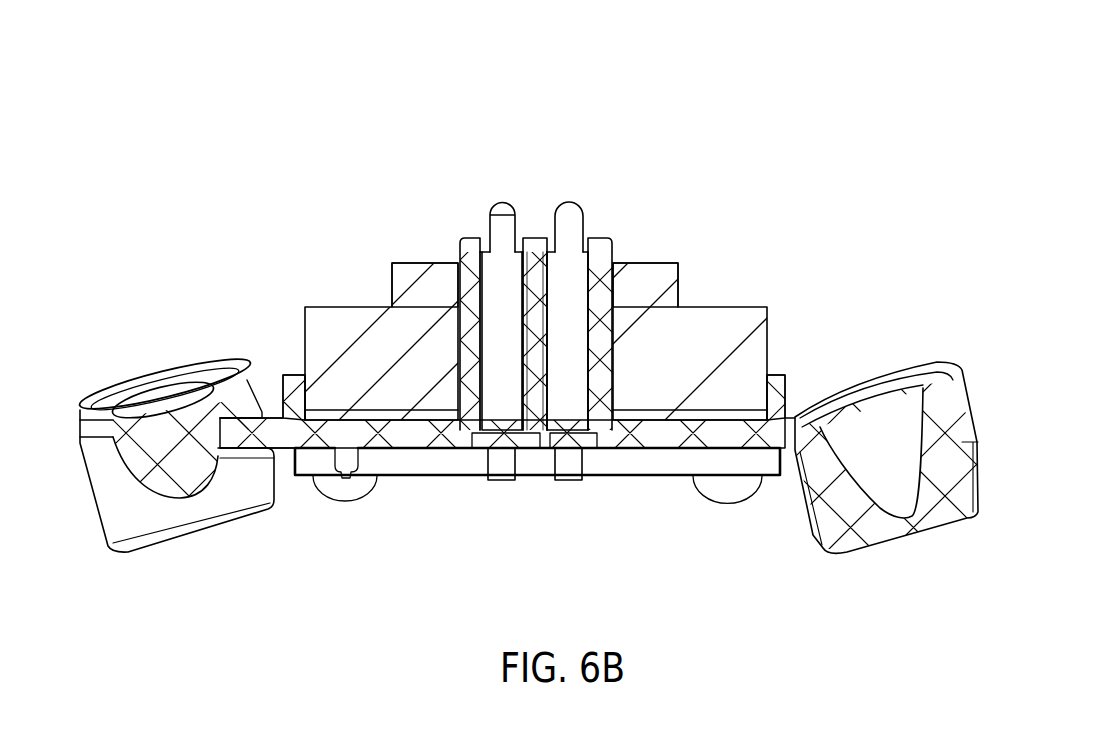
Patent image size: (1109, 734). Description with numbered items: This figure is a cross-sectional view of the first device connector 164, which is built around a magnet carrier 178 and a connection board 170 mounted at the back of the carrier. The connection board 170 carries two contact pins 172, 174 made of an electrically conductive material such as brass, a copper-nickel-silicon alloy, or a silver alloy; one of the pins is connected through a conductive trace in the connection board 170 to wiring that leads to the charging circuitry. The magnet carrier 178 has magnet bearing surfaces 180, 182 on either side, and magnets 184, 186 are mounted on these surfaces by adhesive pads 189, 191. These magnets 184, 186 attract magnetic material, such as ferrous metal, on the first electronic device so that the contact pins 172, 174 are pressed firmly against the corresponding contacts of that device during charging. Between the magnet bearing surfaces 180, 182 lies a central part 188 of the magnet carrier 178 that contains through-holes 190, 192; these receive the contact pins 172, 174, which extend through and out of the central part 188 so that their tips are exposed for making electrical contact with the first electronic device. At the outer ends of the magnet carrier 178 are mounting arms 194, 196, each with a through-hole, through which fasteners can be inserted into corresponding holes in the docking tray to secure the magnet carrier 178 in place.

The first device connector 164 is at (618, 110).
The connection board 170 is at (680, 460).
The contact pin 172 is at (503, 202).
The contact pin 174 is at (570, 202).
The magnet carrier 178 is at (318, 427).
The magnet bearing surface 180 is at (437, 417).
The magnet bearing surface 182 is at (642, 415).
The magnet 184 is at (352, 302).
The magnet 186 is at (720, 308).
The central part 188 is at (602, 243).
The adhesive pad 189 is at (328, 415).
The through-hole 190 is at (533, 407).
The adhesive pad 191 is at (755, 415).
The through-hole 192 is at (540, 390).
The mounting arm 194 is at (152, 386).
The mounting arm 196 is at (913, 372).